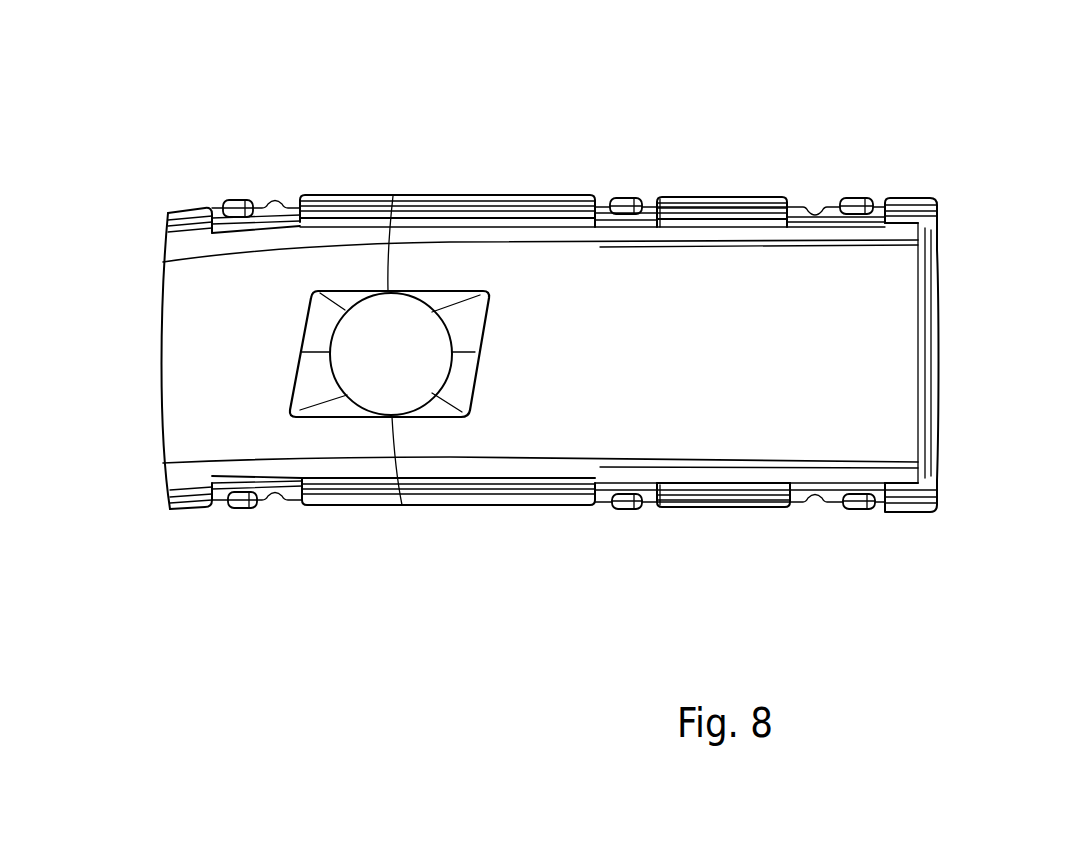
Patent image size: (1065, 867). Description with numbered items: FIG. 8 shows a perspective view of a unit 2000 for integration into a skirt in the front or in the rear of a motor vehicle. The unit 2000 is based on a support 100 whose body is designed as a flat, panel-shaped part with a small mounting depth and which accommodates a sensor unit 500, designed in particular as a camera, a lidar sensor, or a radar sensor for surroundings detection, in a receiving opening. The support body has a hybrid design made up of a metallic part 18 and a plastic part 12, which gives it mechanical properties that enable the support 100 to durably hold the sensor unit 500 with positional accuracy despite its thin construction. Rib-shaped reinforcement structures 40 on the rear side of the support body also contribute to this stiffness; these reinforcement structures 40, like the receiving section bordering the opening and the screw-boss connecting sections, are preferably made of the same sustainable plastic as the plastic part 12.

The unit 2000 is at (163, 152).
The support 100 is at (275, 176).
The plastic part 12 is at (563, 363).
The metallic part 18 is at (808, 205).
The reinforcement structures 40 is at (643, 511).
The sensor unit 500 is at (413, 367).